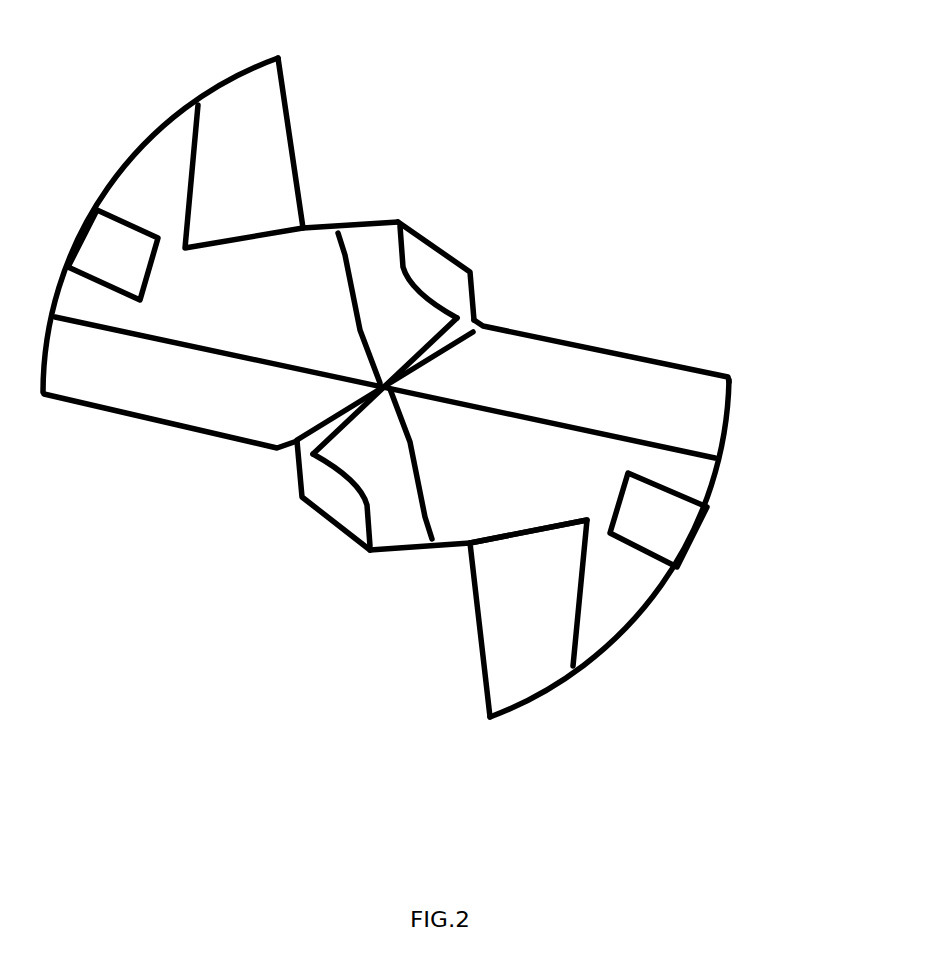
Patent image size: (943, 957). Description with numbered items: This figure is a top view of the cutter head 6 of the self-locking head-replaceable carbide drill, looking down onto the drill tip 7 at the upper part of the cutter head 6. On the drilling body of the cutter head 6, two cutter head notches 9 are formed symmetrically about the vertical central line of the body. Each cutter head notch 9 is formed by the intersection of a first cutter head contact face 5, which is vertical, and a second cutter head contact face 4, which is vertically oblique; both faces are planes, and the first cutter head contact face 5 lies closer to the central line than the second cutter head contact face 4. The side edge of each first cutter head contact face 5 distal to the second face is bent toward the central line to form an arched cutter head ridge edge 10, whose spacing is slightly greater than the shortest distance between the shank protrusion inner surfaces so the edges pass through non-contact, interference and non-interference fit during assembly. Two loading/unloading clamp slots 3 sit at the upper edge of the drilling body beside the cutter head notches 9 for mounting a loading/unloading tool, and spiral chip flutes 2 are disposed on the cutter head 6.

The spiral chip flute 2 is at (443, 278).
The loading/unloading clamp slot 3 is at (118, 243).
The second cutter head contact face 4 is at (258, 173).
The first cutter head contact face 5 is at (363, 218).
The cutter head 6 is at (533, 400).
The drill tip 7 is at (400, 380).
The cutter head notch 9 is at (327, 190).
The cutter head ridge edge 10 is at (408, 215).